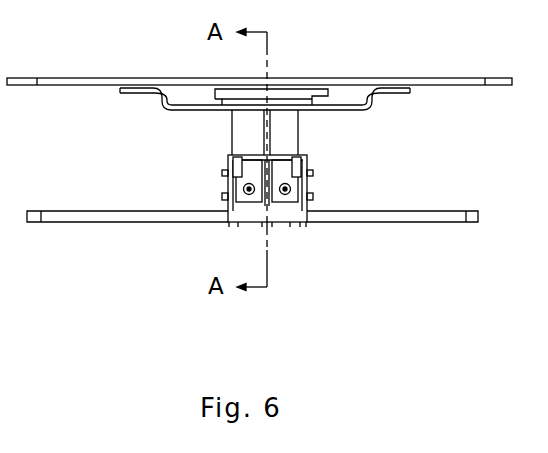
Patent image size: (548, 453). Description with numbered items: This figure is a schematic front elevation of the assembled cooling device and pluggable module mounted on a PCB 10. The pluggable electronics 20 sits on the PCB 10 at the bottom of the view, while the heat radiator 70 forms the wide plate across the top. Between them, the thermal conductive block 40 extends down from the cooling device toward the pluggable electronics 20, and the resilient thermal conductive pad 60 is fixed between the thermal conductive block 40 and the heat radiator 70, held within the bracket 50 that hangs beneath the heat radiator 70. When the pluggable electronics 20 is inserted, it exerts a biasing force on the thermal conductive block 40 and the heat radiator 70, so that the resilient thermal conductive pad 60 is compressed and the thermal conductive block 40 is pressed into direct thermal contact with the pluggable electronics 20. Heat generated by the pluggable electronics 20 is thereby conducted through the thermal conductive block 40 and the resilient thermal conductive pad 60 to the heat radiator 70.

The PCB 10 is at (435, 218).
The pluggable electronics 20 is at (310, 181).
The thermal conductive block 40 is at (245, 130).
The bracket 50 is at (340, 108).
The resilient thermal conductive pad 60 is at (291, 95).
The heat radiator 70 is at (432, 82).